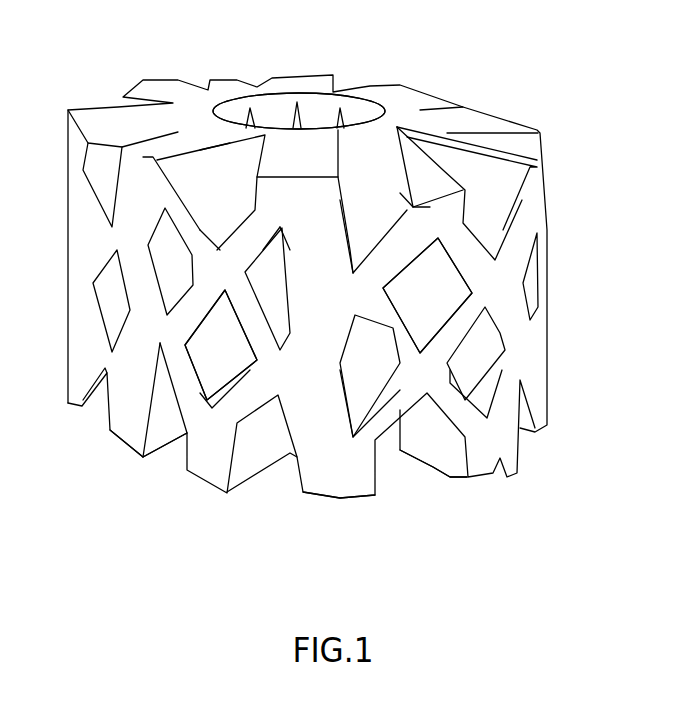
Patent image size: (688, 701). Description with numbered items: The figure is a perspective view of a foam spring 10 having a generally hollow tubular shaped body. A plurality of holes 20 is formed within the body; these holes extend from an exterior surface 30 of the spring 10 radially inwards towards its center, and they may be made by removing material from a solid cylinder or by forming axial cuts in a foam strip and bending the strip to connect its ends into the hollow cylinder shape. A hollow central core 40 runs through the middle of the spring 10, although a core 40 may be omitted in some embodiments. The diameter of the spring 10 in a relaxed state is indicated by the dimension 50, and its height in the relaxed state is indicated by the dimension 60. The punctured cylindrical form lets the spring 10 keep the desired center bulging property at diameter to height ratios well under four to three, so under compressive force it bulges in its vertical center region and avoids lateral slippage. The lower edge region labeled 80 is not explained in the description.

The foam spring 10 is at (554, 167).
The holes 20 is at (201, 360).
The exterior surface 30 is at (215, 245).
The hollow central core 40 is at (334, 108).
The diameter 50 is at (524, 31).
The height 60 is at (36, 131).
The bottom edge 80 is at (343, 484).